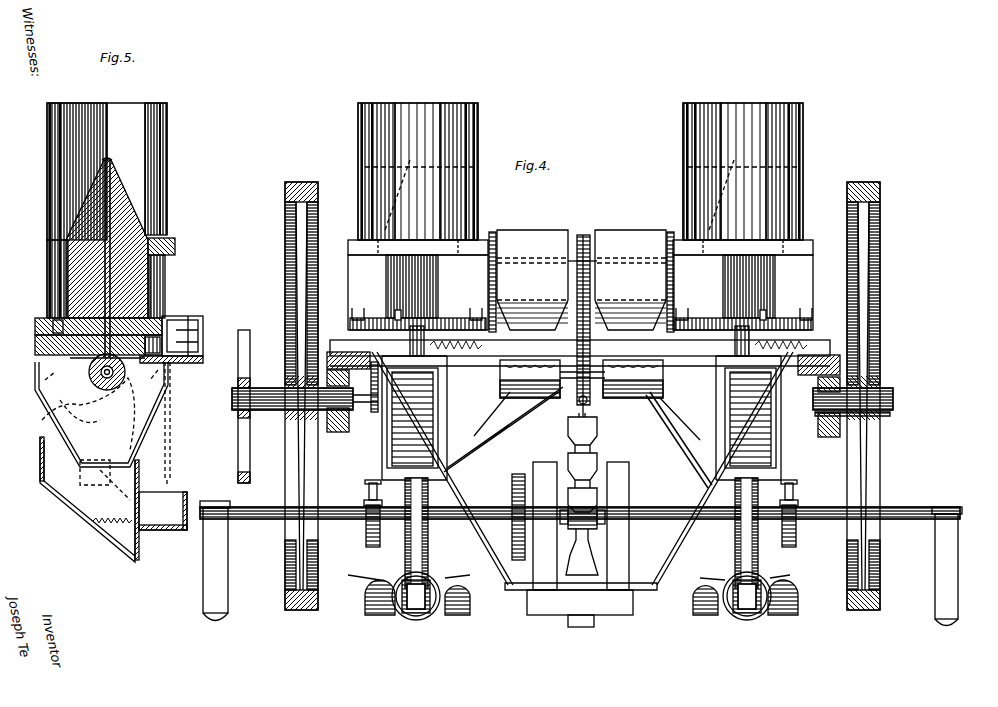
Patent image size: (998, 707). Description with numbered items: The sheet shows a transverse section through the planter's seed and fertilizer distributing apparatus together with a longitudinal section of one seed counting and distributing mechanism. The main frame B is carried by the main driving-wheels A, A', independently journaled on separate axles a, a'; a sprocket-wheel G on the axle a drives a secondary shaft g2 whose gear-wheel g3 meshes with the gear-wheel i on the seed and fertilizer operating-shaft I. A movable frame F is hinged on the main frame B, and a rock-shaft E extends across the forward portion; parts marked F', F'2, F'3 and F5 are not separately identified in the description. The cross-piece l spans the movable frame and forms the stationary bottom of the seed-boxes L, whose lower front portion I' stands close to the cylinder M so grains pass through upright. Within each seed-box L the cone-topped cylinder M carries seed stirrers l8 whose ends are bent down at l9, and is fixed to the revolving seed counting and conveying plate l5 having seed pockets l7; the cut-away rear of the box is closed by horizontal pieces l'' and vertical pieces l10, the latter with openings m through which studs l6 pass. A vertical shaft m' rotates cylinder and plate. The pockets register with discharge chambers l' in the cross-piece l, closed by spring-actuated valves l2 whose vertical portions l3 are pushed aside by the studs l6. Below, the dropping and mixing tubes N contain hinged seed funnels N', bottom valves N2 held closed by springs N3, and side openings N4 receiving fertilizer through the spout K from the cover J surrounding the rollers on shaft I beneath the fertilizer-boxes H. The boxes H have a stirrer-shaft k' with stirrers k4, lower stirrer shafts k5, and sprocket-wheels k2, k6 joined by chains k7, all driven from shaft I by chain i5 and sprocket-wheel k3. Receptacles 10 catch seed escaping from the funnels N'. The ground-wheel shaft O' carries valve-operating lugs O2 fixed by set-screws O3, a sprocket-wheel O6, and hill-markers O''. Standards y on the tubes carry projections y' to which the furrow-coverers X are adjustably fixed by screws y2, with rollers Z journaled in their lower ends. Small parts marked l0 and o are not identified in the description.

In FIG. 5, the seed-box L is at (107, 202).
In FIG. 4, the seed-box L is at (580, 163).
In FIG. 4, the main driving-wheel A is at (301, 381).
In FIG. 4, the main driving-wheel A' is at (863, 381).
In FIG. 5, the supporting-frame or cross-piece l is at (85, 345).
In FIG. 4, the supporting-frame or cross-piece l is at (580, 342).
In FIG. 5, the seed-discharge opening or chamber l' is at (113, 339).
In FIG. 5, the horizontal piece l'' is at (172, 242).
In FIG. 4, the horizontal piece l'' is at (580, 247).
In FIG. 5, the seed-discharging valve l2 is at (166, 358).
In FIG. 5, the vertical portion of valve l3 is at (200, 318).
In FIG. 4, the vertical portion of valve l3 is at (579, 341).
In FIG. 5, the revolving seed counting and conveying plate l5 is at (37, 327).
In FIG. 4, the revolving seed counting and conveying plate l5 is at (581, 248).
In FIG. 4, the stud l6 is at (395, 315).
In FIG. 5, the seed pocket or opening l7 is at (55, 320).
In FIG. 4, the seed pocket or opening l7 is at (620, 345).
In FIG. 5, the seed stirrer l8 is at (110, 160).
In FIG. 4, the bent end of seed stirrer l9 is at (462, 190).
In FIG. 4, the cylinder wall l0 is at (372, 190).
In FIG. 4, the vertical piece l10 is at (580, 292).
In FIG. 4, the cylinder M is at (575, 235).
In FIG. 5, the opening m is at (41, 241).
In FIG. 4, the opening m is at (582, 313).
In FIG. 5, the vertical shaft m' is at (143, 273).
In FIG. 5, the lower front portion of seed-box I' is at (34, 272).
In FIG. 4, the fertilizer-box H is at (581, 270).
In FIG. 4, the stirrer-shaft k' is at (581, 249).
In FIG. 4, the sprocket-wheel k2 is at (584, 274).
In FIG. 4, the sprocket-wheel k3 is at (581, 307).
In FIG. 4, the stirrer k4 is at (499, 330).
In FIG. 4, the sprocket-wheel k6 is at (661, 330).
In FIG. 4, the stirrer shaft k5 is at (581, 293).
In FIG. 4, the sprocket-chain k7 is at (582, 270).
In FIG. 4, the sprocket-chain i5 is at (584, 330).
In FIG. 4, the sheathing or cover J is at (581, 379).
In FIG. 4, the seed and fertilizer operating-shaft I is at (685, 390).
In FIG. 4, the spout or conduit K is at (578, 437).
In FIG. 5, the fertilizer and seed dropping and mixing tube N is at (89, 499).
In FIG. 4, the fertilizer and seed dropping and mixing tube N is at (601, 527).
In FIG. 5, the movable seed-discharging funnel N' is at (101, 414).
In FIG. 4, the movable seed-discharging funnel N' is at (581, 418).
In FIG. 5, the hinged valve N2 is at (95, 528).
In FIG. 4, the hinged valve N2 is at (531, 563).
In FIG. 5, the spring N3 is at (105, 482).
In FIG. 4, the opening N4 is at (584, 469).
In FIG. 4, the movable frame F is at (794, 390).
In FIG. 4, the bracket F' is at (582, 346).
In FIG. 4, the base plate F'2 is at (582, 489).
In FIG. 4, the tab F'3 is at (577, 583).
In FIG. 4, the post F5 is at (593, 526).
In FIG. 4, the rock-shaft E is at (584, 490).
In FIG. 4, the ground-wheel shaft O' is at (581, 563).
In FIG. 4, the hill-marker O'' is at (584, 565).
In FIG. 4, the valve-operating lug O2 is at (366, 538).
In FIG. 4, the set-screw O3 is at (808, 498).
In FIG. 4, the sprocket-wheel O6 is at (512, 490).
In FIG. 4, the axle a is at (305, 406).
In FIG. 4, the axle a' is at (862, 396).
In FIG. 4, the main frame B is at (583, 421).
In FIG. 4, the secondary shaft g2 is at (360, 412).
In FIG. 4, the gear-wheel g3 is at (376, 435).
In FIG. 4, the gear-wheel i is at (471, 393).
In FIG. 4, the furrow-coverer X is at (577, 597).
In FIG. 4, the standard y is at (594, 540).
In FIG. 4, the projection y' is at (582, 590).
In FIG. 4, the screw y2 is at (566, 570).
In FIG. 4, the roller Z is at (415, 610).
In FIG. 5, the box or receptacle 10 is at (163, 511).
In FIG. 5, the sprocket-wheel G is at (178, 452).
In FIG. 5, the pin o is at (163, 364).
In FIG. 4, the pin o is at (565, 382).